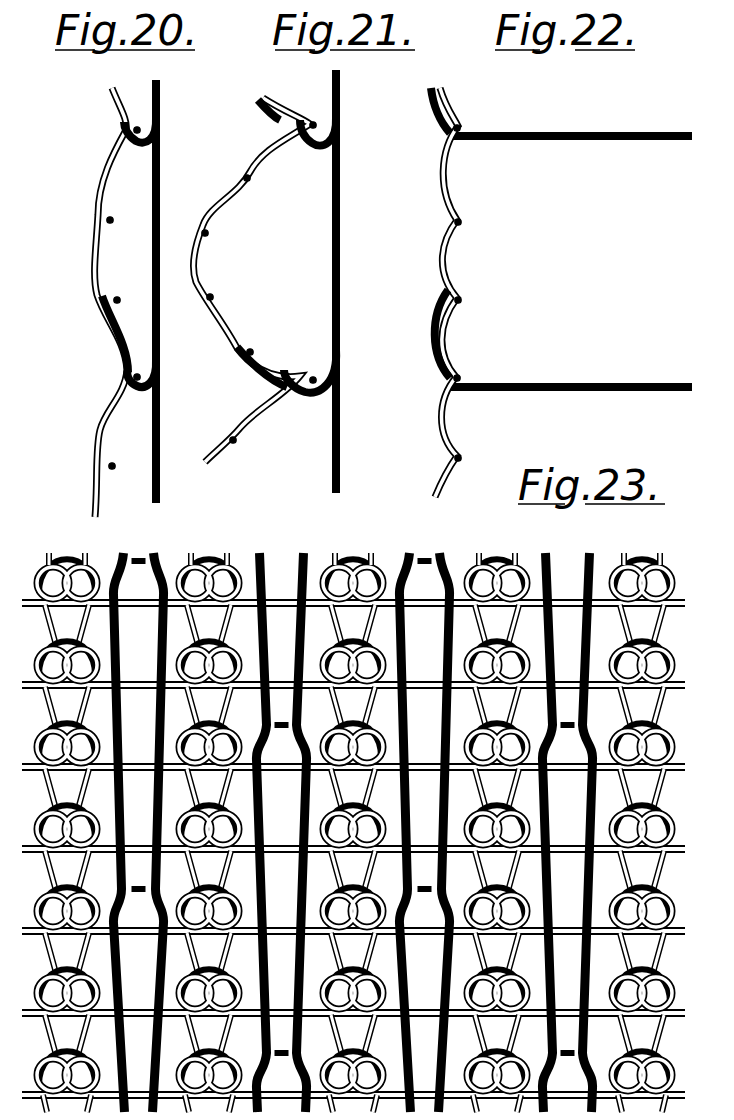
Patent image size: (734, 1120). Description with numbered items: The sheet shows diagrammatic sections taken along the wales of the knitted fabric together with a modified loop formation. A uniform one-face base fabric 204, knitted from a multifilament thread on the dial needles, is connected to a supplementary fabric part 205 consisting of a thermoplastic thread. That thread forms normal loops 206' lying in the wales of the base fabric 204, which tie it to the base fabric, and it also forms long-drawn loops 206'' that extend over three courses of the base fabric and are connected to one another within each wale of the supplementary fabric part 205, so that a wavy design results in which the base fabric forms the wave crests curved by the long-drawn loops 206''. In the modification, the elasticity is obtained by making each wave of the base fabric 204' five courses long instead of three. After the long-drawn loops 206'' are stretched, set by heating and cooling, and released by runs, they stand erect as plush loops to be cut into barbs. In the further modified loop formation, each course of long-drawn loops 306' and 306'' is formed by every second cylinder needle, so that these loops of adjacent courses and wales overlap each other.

In FIG. 20, the base fabric 204 is at (80, 302).
In FIG. 22, the base fabric 204 is at (493, 292).
In FIG. 21, the base fabric 204' is at (253, 281).
In FIG. 20, the supplementary fabric part 205 is at (163, 200).
In FIG. 21, the supplementary fabric part 205 is at (343, 187).
In FIG. 20, the normal loops 206' is at (87, 338).
In FIG. 21, the normal loops 206' is at (290, 280).
In FIG. 22, the normal loops 206' is at (408, 233).
In FIG. 20, the long-drawn loops 206'' is at (175, 312).
In FIG. 21, the long-drawn loops 206'' is at (288, 255).
In FIG. 22, the long-drawn loops 206'' is at (571, 238).
In FIG. 23, the long-drawn loops 306' is at (310, 811).
In FIG. 23, the long-drawn loops 306'' is at (443, 811).